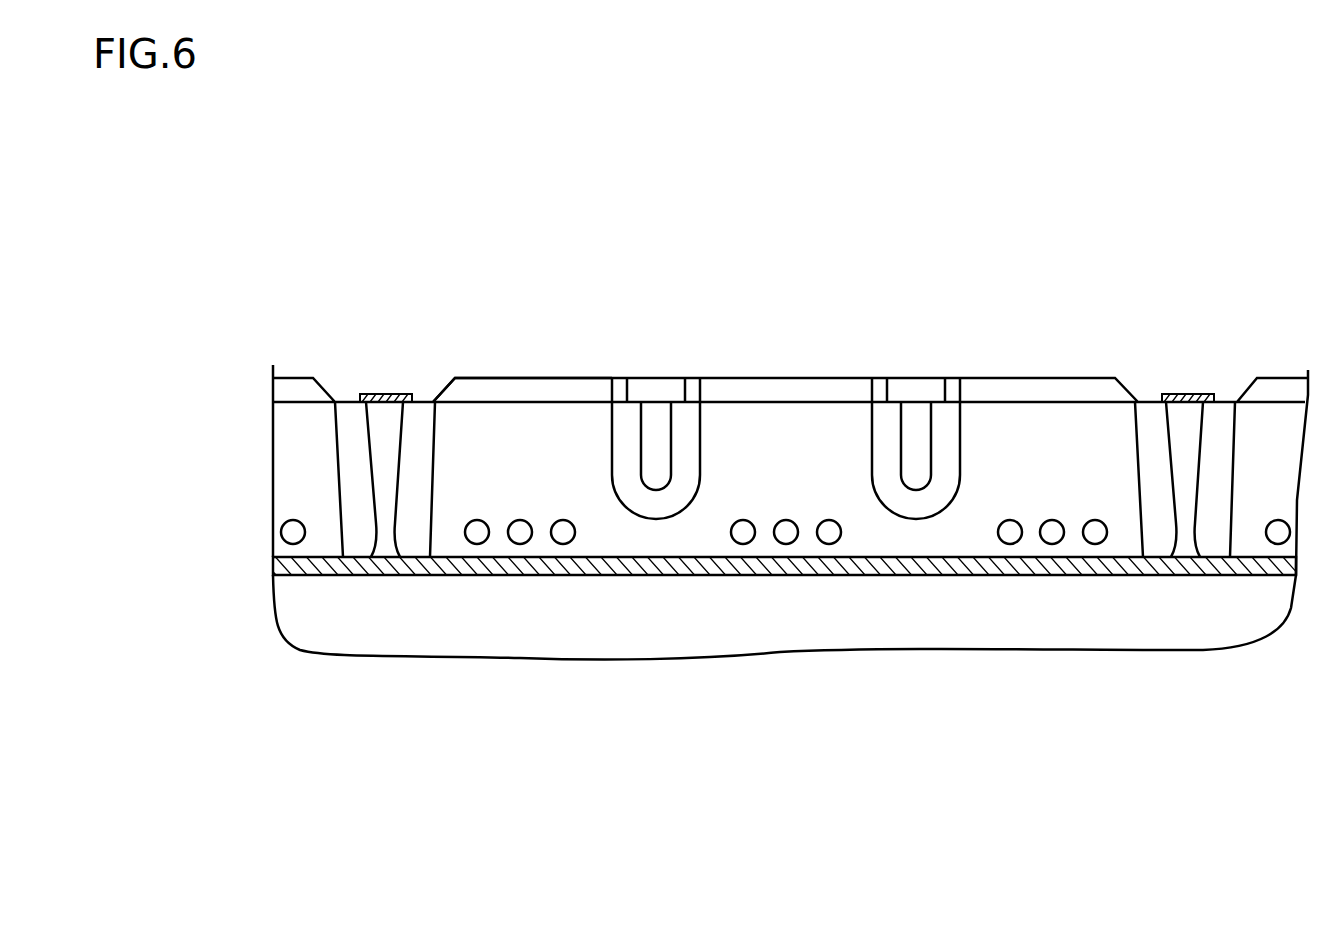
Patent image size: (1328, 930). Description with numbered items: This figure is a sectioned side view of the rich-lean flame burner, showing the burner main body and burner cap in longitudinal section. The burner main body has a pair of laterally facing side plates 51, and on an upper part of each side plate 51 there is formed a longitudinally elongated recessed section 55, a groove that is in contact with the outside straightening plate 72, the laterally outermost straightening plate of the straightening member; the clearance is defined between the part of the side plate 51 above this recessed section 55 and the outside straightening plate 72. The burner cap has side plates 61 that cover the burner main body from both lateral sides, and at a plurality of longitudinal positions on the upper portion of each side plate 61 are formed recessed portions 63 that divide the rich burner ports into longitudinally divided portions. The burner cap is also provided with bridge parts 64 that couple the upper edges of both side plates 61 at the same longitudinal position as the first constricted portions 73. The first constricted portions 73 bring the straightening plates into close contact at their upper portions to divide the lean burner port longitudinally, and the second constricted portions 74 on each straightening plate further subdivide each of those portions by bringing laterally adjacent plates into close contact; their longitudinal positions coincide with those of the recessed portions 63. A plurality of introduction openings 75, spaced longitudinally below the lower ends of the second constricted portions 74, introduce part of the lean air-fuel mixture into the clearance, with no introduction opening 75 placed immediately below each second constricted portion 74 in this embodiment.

The side plate 51 is at (693, 573).
The recessed section 55 is at (645, 648).
The side plate 61 is at (568, 376).
The recessed portion 63 is at (650, 386).
The bridge part 64 is at (385, 393).
The outside straightening plate 72 is at (496, 417).
The first constricted portion 73 is at (397, 493).
The second constricted portion 74 is at (653, 442).
The introduction opening 75 is at (483, 541).